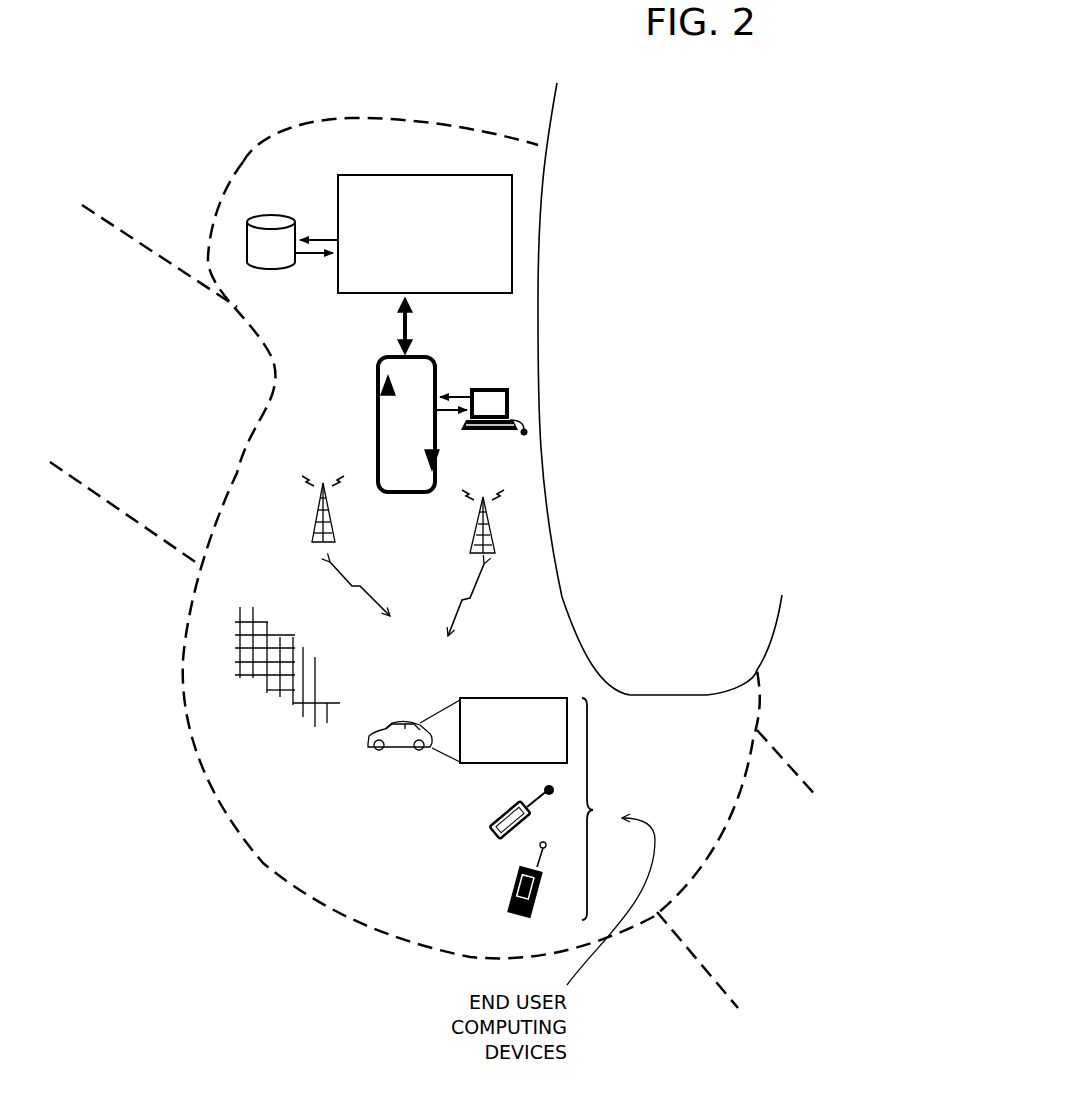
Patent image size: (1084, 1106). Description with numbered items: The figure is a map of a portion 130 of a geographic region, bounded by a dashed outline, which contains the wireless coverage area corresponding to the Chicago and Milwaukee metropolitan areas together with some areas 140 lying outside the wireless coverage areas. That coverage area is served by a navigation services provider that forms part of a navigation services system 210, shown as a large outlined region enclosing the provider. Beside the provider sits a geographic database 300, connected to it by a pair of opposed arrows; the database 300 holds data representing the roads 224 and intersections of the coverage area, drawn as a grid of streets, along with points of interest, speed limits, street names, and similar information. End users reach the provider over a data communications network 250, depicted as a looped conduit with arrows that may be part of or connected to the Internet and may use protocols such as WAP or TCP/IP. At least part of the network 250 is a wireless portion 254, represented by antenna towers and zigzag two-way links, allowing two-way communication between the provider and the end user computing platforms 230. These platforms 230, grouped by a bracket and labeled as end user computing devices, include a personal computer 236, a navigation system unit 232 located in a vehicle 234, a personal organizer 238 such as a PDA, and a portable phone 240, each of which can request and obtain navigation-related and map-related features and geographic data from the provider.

The portion of the geographic region 130 is at (376, 61).
The areas located outside the wireless coverage areas 140 is at (188, 191).
The navigation services system 210 is at (520, 248).
The geographic database 300 is at (300, 210).
The data communications network 250 is at (368, 374).
The personal computer 236 is at (493, 375).
The computer platforms 230 is at (520, 398).
The wireless portion 254 is at (460, 574).
The roads 224 is at (288, 624).
The navigation system unit 232 is at (503, 675).
The vehicle 234 is at (384, 765).
The portable phone 240 is at (490, 812).
The personal organizer 238 is at (498, 886).